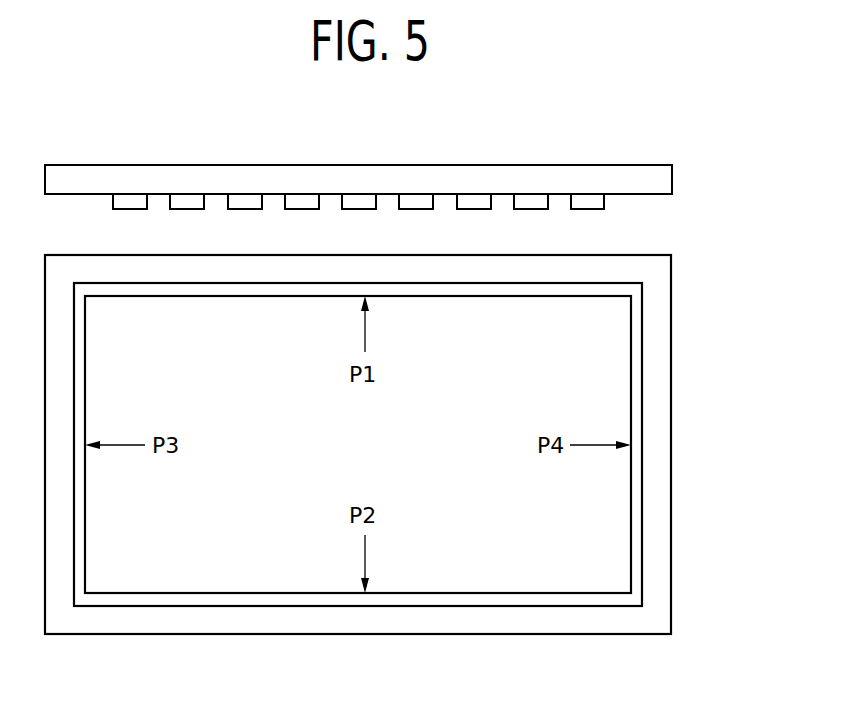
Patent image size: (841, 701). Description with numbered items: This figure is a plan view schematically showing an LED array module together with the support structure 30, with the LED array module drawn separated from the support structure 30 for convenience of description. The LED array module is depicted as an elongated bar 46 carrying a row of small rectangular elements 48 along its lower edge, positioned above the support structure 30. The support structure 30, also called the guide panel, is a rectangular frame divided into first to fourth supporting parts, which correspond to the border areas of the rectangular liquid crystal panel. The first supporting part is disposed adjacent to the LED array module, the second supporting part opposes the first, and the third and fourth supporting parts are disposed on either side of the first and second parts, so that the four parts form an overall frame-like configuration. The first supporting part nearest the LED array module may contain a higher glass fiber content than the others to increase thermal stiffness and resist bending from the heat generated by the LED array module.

The light guide plate / frame member 46 is at (657, 179).
The protrusions 48 is at (598, 201).
The support structure 30 is at (661, 393).